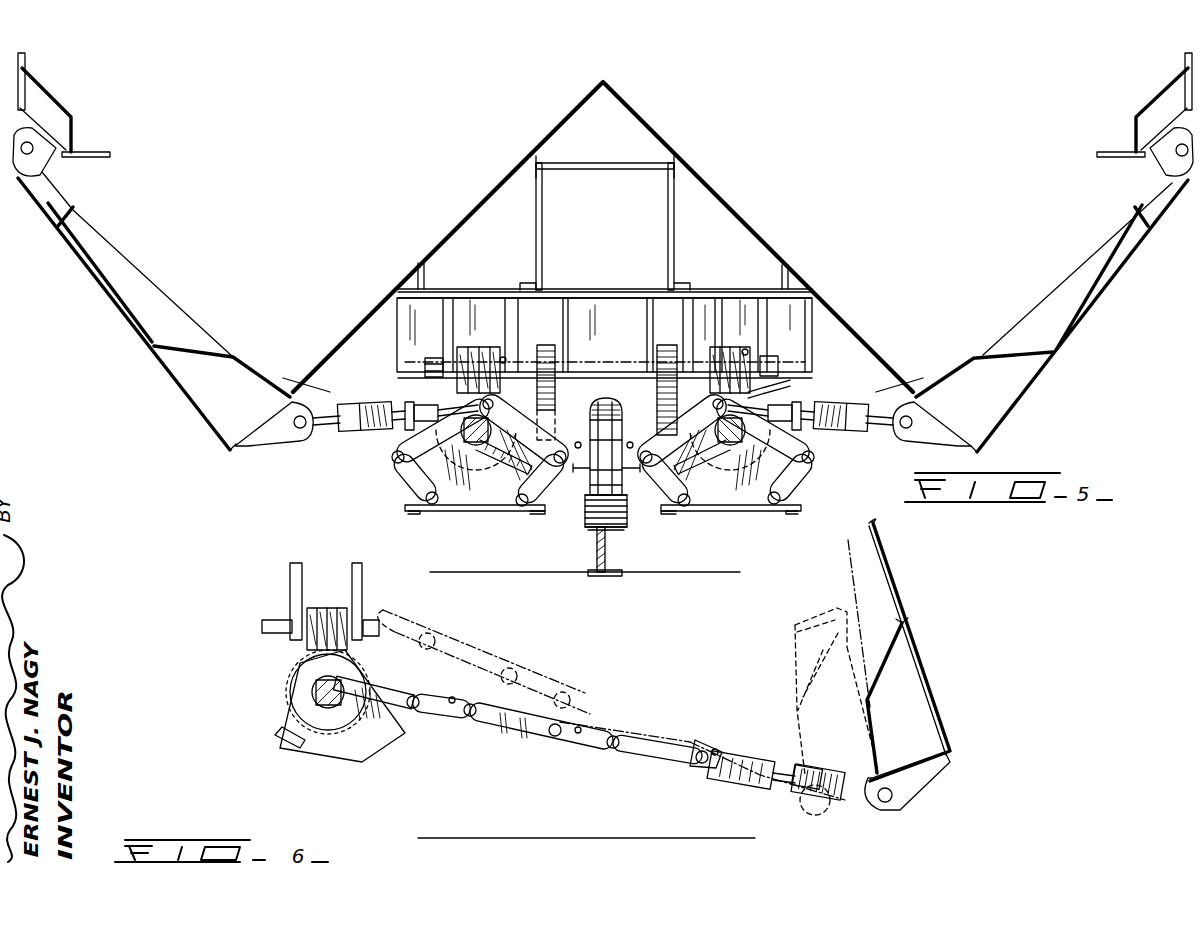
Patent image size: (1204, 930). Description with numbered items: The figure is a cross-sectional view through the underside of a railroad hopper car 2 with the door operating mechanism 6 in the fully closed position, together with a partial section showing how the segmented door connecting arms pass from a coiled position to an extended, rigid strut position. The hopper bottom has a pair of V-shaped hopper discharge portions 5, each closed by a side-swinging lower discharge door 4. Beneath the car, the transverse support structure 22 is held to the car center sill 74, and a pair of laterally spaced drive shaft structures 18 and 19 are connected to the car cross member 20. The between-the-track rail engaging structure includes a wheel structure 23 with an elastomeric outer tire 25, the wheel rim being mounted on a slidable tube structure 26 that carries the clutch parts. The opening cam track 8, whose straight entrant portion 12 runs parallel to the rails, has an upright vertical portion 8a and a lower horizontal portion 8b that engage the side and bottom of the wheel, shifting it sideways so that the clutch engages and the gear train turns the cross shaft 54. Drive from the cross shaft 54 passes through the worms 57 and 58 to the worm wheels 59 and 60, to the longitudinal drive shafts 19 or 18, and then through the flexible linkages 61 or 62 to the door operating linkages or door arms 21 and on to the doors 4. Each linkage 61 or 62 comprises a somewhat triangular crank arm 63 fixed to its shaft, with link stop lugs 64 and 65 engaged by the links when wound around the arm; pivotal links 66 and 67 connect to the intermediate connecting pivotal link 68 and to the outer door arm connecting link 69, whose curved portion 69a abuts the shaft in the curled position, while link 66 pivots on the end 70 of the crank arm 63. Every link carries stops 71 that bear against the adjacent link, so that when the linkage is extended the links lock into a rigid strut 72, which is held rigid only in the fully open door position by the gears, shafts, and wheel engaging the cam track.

In FIG. 5, the railroad hopper car 2 is at (795, 518).
In FIG. 5, the lower discharge door 4 is at (108, 316).
In FIG. 6, the lower discharge door 4 is at (953, 598).
In FIG. 5, the V-shaped hopper discharge portion 5 is at (497, 183).
In FIG. 5, the door operating mechanism 6 is at (552, 530).
In FIG. 5, the opening cam track 8 is at (612, 533).
In FIG. 5, the upright vertical portion 8a is at (627, 526).
In FIG. 5, the lower horizontal portion 8b is at (597, 532).
In FIG. 5, the entrant portion 12 is at (627, 510).
In FIG. 5, the drive shaft structure 18 is at (603, 440).
In FIG. 5, the drive shaft structure 19 is at (728, 458).
In FIG. 5, the car cross member 20 is at (815, 345).
In FIG. 5, the door operating linkage 21 is at (560, 400).
In FIG. 5, the transverse support structure 22 is at (742, 290).
In FIG. 5, the wheel structure 23 is at (626, 477).
In FIG. 5, the outer tire 25 is at (596, 501).
In FIG. 5, the slidable tube structure 26 is at (623, 428).
In FIG. 5, the cross shaft 54 is at (638, 362).
In FIG. 5, the worm 57 is at (490, 347).
In FIG. 5, the worm 58 is at (728, 347).
In FIG. 5, the worm wheel 59 is at (430, 385).
In FIG. 5, the worm wheel 60 is at (762, 388).
In FIG. 5, the flexible linkage 61 is at (405, 492).
In FIG. 5, the flexible linkage 62 is at (778, 412).
In FIG. 6, the flexible linkage 62 is at (592, 745).
In FIG. 5, the crank arm 63 is at (400, 428).
In FIG. 5, the link stop lug 64 is at (607, 497).
In FIG. 6, the link stop lug 64 is at (392, 725).
In FIG. 5, the link stop lug 65 is at (520, 460).
In FIG. 6, the link stop lug 65 is at (283, 745).
In FIG. 5, the pivotal link 66 is at (396, 468).
In FIG. 6, the pivotal link 66 is at (442, 722).
In FIG. 5, the pivotal link 67 is at (555, 468).
In FIG. 6, the pivotal link 67 is at (560, 745).
In FIG. 5, the intermediate connecting pivotal link 68 is at (455, 511).
In FIG. 6, the intermediate connecting pivotal link 68 is at (520, 710).
In FIG. 5, the outer door arm connecting link 69 is at (665, 375).
In FIG. 6, the outer door arm connecting link 69 is at (660, 770).
In FIG. 6, the curved portion 69a is at (695, 778).
In FIG. 5, the end of crank arm 70 is at (393, 449).
In FIG. 6, the end of crank arm 70 is at (400, 700).
In FIG. 5, the stop 71 is at (507, 360).
In FIG. 6, the stop 71 is at (452, 698).
In FIG. 6, the rigid strut 72 is at (637, 730).
In FIG. 5, the car center sill 74 is at (677, 228).